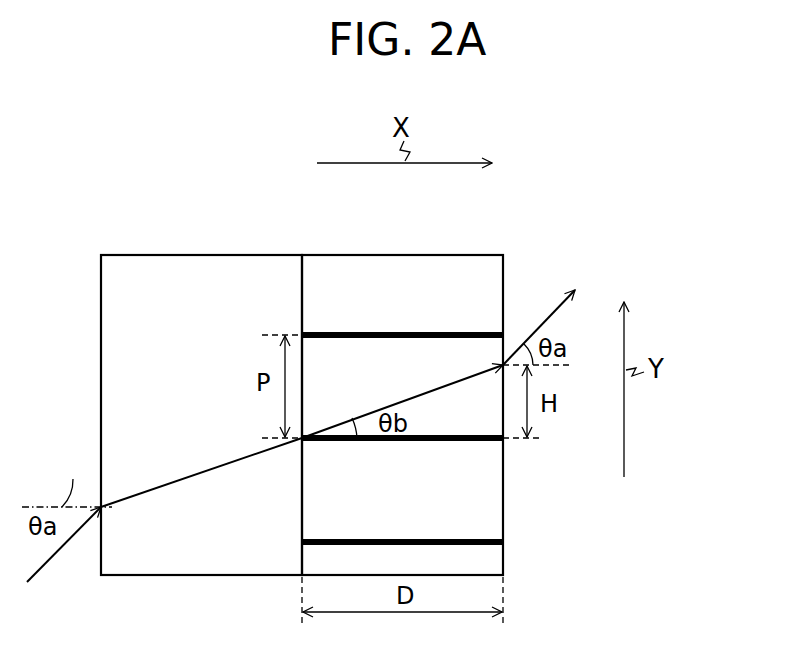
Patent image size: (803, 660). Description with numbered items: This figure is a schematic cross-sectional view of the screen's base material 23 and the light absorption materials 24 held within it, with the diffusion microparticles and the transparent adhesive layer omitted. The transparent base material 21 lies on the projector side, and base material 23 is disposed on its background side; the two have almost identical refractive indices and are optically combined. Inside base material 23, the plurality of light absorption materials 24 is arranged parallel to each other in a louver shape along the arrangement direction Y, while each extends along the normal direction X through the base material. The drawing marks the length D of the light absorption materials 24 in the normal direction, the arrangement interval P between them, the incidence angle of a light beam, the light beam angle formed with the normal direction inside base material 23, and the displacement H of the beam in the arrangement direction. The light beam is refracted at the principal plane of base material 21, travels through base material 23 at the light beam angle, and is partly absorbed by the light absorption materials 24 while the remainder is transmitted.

The base material 21 is at (193, 285).
The base material 23 is at (375, 295).
The light absorption materials 24 is at (452, 333).